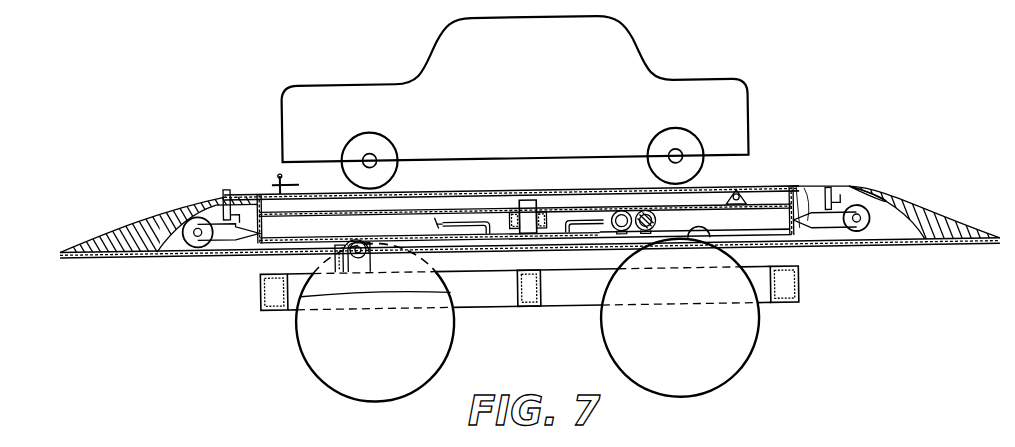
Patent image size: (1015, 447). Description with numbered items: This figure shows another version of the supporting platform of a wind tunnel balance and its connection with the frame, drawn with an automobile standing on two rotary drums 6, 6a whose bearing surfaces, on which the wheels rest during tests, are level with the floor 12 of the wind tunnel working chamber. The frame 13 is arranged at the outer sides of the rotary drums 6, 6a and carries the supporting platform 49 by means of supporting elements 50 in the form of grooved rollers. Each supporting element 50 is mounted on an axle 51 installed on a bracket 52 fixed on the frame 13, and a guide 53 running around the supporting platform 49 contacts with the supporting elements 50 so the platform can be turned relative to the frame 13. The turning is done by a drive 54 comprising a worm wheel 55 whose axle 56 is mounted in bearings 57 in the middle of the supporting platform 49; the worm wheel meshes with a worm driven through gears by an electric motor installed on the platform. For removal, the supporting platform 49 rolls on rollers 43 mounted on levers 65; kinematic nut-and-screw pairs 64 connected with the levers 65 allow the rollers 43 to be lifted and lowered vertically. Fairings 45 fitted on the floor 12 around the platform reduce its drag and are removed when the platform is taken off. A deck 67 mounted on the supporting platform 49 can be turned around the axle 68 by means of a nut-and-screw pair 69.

The rotary drum 6 is at (744, 336).
The rotary drum 6a is at (316, 362).
The floor 12 is at (178, 256).
The frame 13 is at (271, 306).
The rollers 43 is at (183, 206).
The fairings 45 is at (128, 228).
The supporting platform 49 is at (803, 190).
The supporting elements 50 is at (340, 237).
The axle 51 is at (368, 235).
The bracket 52 is at (355, 270).
The guide 53 is at (803, 238).
The drive 54 is at (603, 240).
The worm wheel 55 is at (461, 229).
The axle 56 is at (533, 205).
The bearings 57 is at (518, 212).
The nut-and-screw pairs 64 is at (228, 188).
The levers 65 is at (227, 234).
The deck 67 is at (333, 187).
The axle 68 is at (743, 193).
The nut-and-screw pair 69 is at (277, 180).